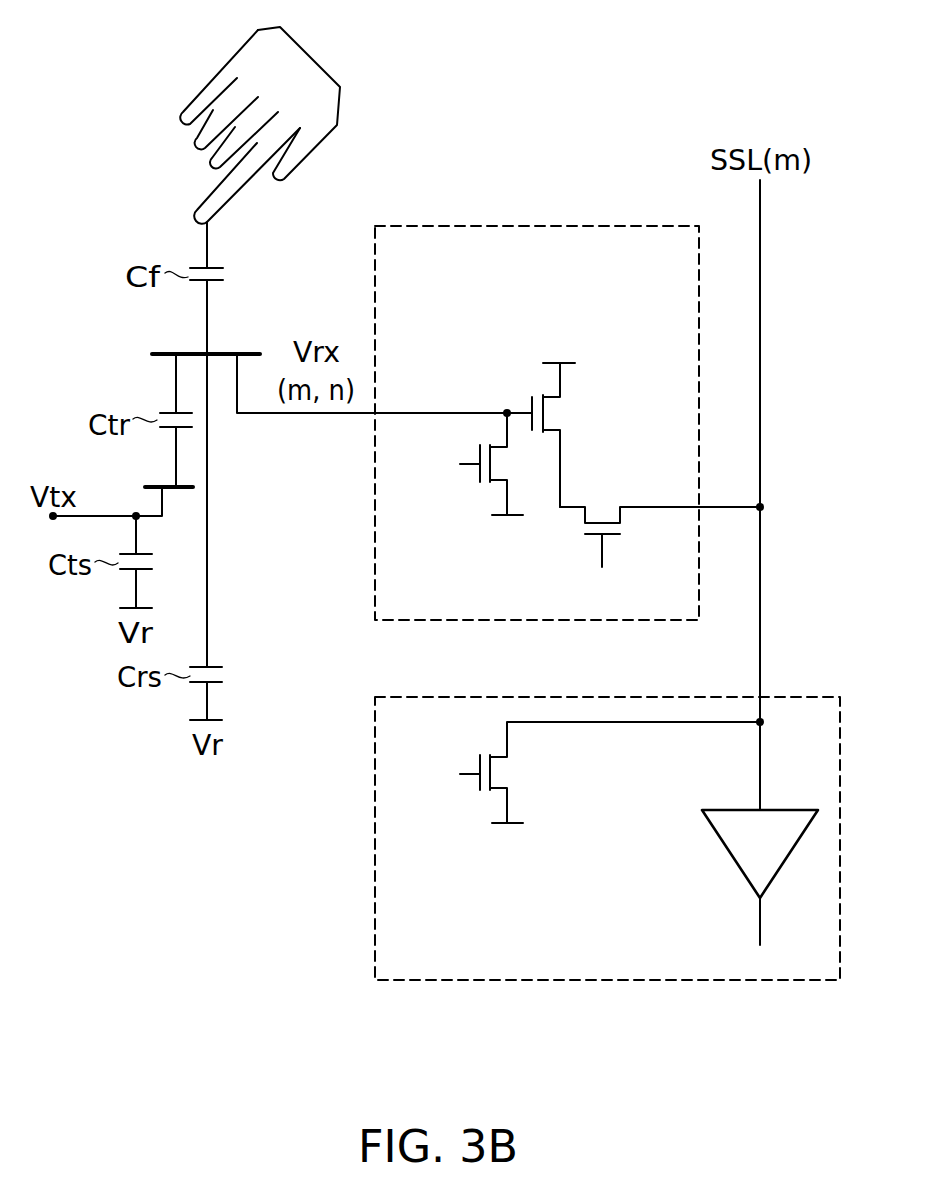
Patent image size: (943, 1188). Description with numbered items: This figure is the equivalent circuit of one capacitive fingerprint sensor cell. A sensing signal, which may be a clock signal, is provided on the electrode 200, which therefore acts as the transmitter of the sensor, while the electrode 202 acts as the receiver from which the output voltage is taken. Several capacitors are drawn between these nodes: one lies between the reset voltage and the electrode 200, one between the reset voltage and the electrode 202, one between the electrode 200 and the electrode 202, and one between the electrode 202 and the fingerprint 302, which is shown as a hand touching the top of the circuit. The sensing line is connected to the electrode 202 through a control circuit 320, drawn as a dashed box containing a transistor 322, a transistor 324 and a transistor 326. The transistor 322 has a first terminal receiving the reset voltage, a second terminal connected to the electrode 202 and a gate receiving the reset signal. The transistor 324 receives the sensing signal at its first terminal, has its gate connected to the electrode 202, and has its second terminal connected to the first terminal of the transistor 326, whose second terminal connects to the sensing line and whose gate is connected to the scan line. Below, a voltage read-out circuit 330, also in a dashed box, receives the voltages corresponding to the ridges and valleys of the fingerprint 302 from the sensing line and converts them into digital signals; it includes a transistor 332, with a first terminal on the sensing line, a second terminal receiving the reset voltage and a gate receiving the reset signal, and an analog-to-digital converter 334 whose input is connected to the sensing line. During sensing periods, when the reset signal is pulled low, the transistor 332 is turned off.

The fingerprint 302 is at (197, 223).
The electrode 202 is at (152, 353).
The electrode 200 is at (153, 483).
The control circuit 320 is at (377, 220).
The transistor 322 is at (480, 477).
The transistor 324 is at (555, 413).
The transistor 326 is at (602, 510).
The voltage read-out circuit 330 is at (377, 693).
The transistor 332 is at (500, 773).
The analog-to-digital converter 334 is at (730, 857).